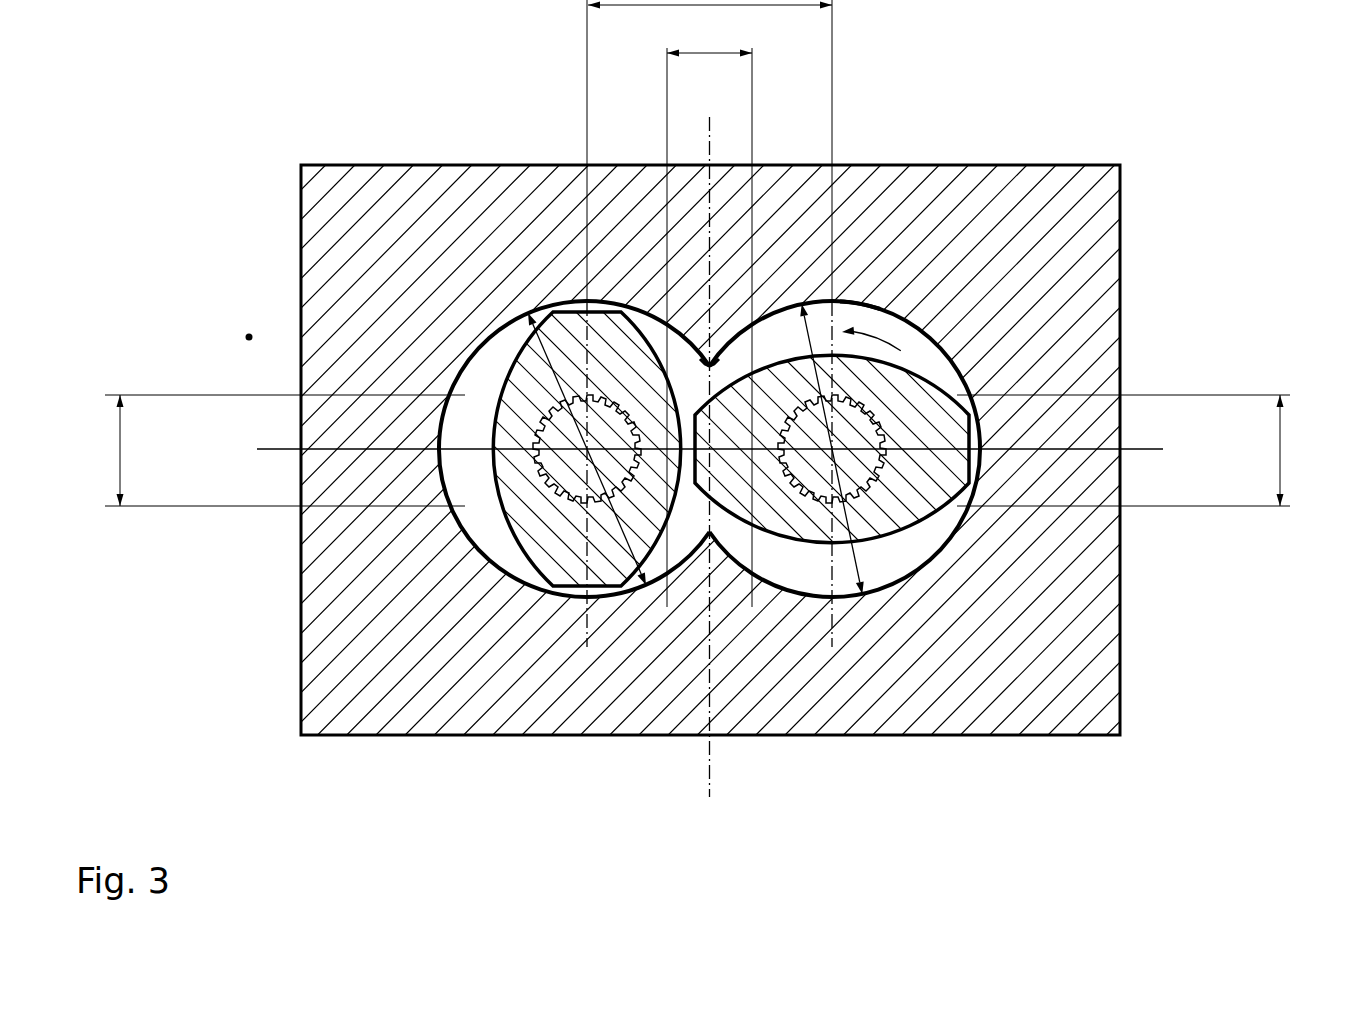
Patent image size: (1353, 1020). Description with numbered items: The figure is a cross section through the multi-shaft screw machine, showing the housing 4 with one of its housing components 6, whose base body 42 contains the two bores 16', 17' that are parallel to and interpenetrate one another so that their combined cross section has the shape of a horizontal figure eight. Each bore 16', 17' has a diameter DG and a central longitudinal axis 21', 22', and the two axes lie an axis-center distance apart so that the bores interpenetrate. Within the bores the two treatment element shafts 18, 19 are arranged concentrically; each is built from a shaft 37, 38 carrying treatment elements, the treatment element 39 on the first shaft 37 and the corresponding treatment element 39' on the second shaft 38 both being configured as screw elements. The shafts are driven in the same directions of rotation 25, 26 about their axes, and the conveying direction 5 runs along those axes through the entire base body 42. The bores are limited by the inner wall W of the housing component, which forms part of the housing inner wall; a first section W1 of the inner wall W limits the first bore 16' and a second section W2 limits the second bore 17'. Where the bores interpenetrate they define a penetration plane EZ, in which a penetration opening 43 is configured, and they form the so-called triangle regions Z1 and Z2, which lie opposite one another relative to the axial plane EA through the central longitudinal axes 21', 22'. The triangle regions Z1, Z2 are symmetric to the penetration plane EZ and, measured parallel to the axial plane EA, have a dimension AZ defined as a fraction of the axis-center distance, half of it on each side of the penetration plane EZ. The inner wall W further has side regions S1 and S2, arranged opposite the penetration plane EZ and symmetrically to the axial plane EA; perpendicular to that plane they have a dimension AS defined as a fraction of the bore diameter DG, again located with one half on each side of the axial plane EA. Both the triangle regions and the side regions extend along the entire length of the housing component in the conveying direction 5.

The housing 4 is at (540, 150).
The conveying direction 5 is at (249, 337).
The housing component 6 is at (899, 150).
The first bore 16' is at (293, 466).
The second bore 17' is at (845, 340).
The treatment element shaft 18 is at (519, 332).
The treatment element shaft 19 is at (735, 376).
The central longitudinal axis 21' is at (586, 581).
The central longitudinal axis 22' is at (832, 602).
The direction of rotation 25 is at (486, 509).
The direction of rotation 26 is at (867, 307).
The first shaft 37 is at (516, 556).
The second shaft 38 is at (821, 558).
The treatment element 39 is at (637, 450).
The treatment element 39' is at (714, 342).
The base body 42 is at (420, 172).
The penetration opening 43 is at (701, 380).
The inner wall W is at (503, 348).
The first section of the inner wall W1 is at (486, 553).
The second section of the inner wall W2 is at (912, 573).
The side region S1 is at (442, 494).
The side region S2 is at (980, 407).
The triangle region Z1 is at (710, 358).
The triangle region Z2 is at (710, 542).
The axial plane EA is at (1152, 449).
The penetration plane EZ is at (710, 760).
The dimension A_S AS is at (704, 450).
The dimension A_Z AZ is at (709, 312).
The bore diameter D_G DG is at (655, 530).